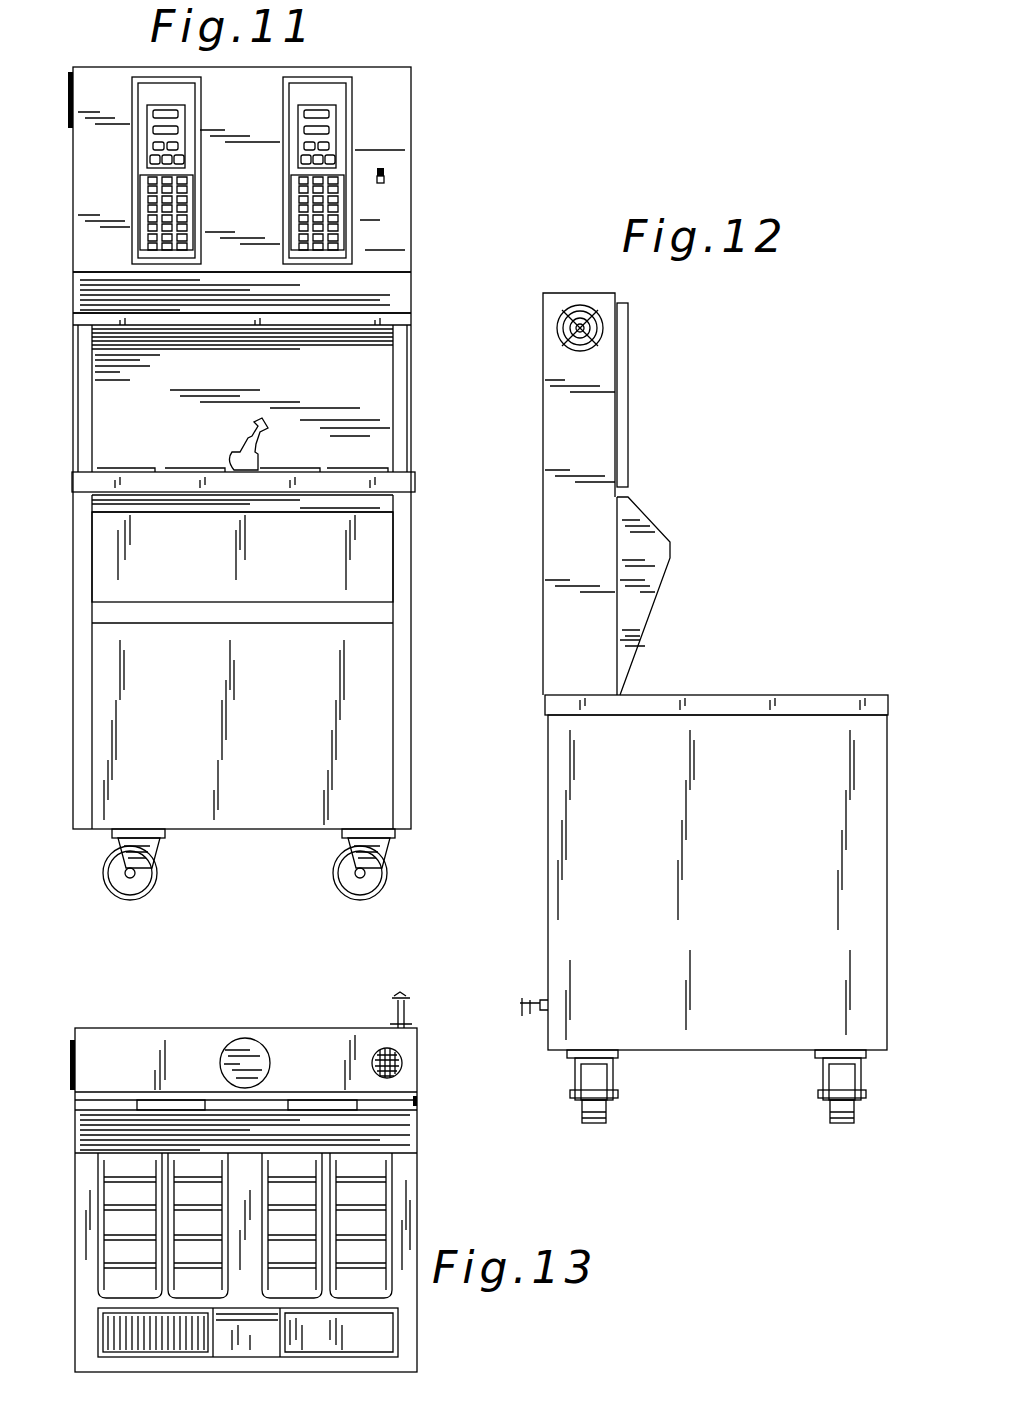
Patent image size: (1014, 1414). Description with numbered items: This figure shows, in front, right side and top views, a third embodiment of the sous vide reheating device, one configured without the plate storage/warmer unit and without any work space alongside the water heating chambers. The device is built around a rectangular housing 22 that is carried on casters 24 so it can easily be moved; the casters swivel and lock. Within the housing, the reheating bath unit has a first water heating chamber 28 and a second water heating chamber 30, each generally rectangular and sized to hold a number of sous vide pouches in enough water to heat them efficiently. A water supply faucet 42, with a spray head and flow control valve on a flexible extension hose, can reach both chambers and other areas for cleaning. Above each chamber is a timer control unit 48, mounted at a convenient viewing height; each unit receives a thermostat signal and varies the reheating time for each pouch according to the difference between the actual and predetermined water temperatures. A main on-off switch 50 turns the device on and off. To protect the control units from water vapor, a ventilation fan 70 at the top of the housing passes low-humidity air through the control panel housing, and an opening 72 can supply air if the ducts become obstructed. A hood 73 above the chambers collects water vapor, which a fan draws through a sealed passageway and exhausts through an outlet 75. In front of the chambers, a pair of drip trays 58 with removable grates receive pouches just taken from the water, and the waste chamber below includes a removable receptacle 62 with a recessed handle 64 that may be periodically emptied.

In FIG. 11, the housing 22 is at (378, 766).
In FIG. 11, the casters 24 is at (146, 852).
In FIG. 12, the casters 24 is at (615, 1082).
In FIG. 11, the first water heating chamber 28 is at (175, 467).
In FIG. 13, the first water heating chamber 28 is at (120, 1215).
In FIG. 11, the second water heating chamber 30 is at (363, 460).
In FIG. 13, the second water heating chamber 30 is at (392, 1220).
In FIG. 11, the water supply faucet 42 is at (255, 448).
In FIG. 11, the timer control unit 48 is at (132, 100).
In FIG. 12, the timer control unit 48 is at (630, 396).
In FIG. 13, the timer control unit 48 is at (137, 1105).
In FIG. 11, the main on-off switch 50 is at (388, 172).
In FIG. 13, the main on-off switch 50 is at (420, 1092).
In FIG. 13, the drip trays 58 is at (105, 1330).
In FIG. 11, the removable receptacle 62 is at (378, 566).
In FIG. 11, the recessed handle 64 is at (375, 500).
In FIG. 11, the ventilation fan 70 is at (68, 100).
In FIG. 12, the ventilation fan 70 is at (576, 302).
In FIG. 13, the ventilation fan 70 is at (73, 1045).
In FIG. 13, the opening 72 is at (398, 1055).
In FIG. 11, the hood 73 is at (408, 292).
In FIG. 12, the hood 73 is at (664, 528).
In FIG. 13, the outlet 75 is at (258, 1052).